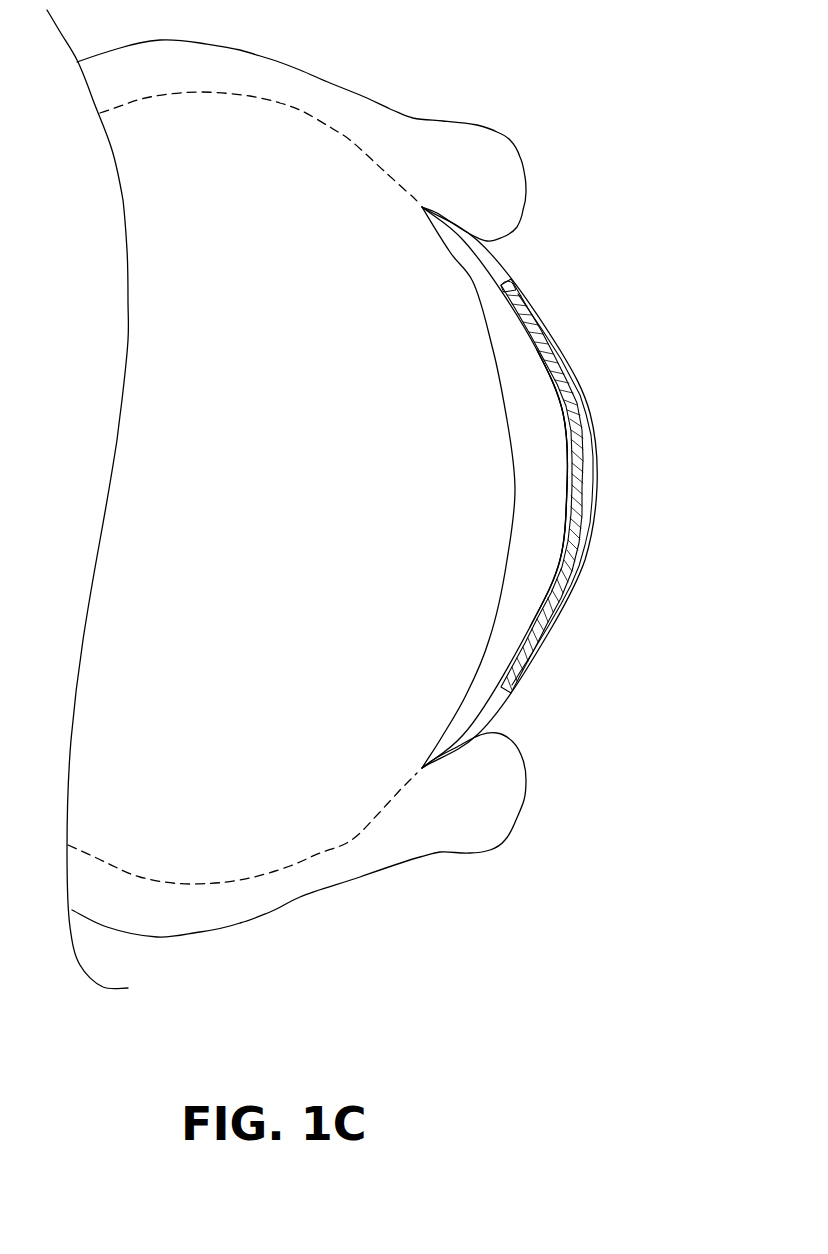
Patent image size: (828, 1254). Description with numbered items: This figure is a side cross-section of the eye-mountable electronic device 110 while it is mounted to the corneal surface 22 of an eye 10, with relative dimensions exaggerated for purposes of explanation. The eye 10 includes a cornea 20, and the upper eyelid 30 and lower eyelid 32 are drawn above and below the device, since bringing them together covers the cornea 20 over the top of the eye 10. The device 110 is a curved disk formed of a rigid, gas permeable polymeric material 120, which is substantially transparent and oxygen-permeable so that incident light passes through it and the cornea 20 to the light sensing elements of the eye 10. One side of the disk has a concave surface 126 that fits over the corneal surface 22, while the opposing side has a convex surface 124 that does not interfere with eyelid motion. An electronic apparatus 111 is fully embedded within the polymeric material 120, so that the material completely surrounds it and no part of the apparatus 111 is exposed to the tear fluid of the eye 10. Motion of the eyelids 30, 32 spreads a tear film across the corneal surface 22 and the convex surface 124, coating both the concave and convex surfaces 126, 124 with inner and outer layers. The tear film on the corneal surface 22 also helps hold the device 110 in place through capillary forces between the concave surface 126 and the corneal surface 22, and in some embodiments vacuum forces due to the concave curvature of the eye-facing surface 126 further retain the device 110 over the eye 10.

The eye 10 is at (376, 897).
The cornea 20 is at (537, 535).
The corneal surface 22 is at (577, 575).
The upper eyelid 30 is at (520, 158).
The lower eyelid 32 is at (520, 775).
The eye-mountable electronic device 110 is at (584, 338).
The electronic apparatus 111 is at (517, 295).
The rigid, gas permeable polymeric material 120 is at (543, 322).
The convex surface 124 is at (592, 404).
The concave surface 126 is at (559, 458).